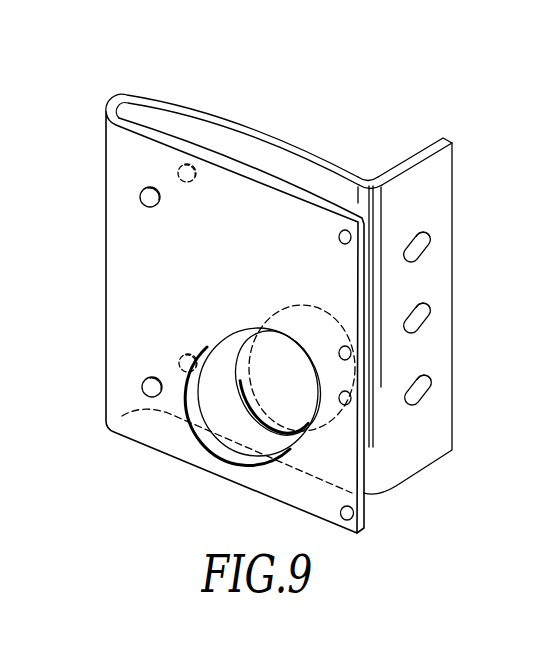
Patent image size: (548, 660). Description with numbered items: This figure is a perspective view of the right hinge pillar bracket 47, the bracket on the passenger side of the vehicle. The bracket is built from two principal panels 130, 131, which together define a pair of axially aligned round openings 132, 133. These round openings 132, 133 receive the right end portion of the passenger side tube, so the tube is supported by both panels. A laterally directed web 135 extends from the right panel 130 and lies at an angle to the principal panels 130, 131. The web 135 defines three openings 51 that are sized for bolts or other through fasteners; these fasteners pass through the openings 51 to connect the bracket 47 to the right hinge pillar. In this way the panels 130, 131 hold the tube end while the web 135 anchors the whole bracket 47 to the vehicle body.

The right hinge pillar bracket 47 is at (281, 278).
The openings 51 is at (430, 376).
The principal panel 130 is at (312, 153).
The principal panel 131 is at (118, 282).
The round opening 132 is at (308, 324).
The round opening 133 is at (220, 352).
The laterally directed web 135 is at (438, 316).